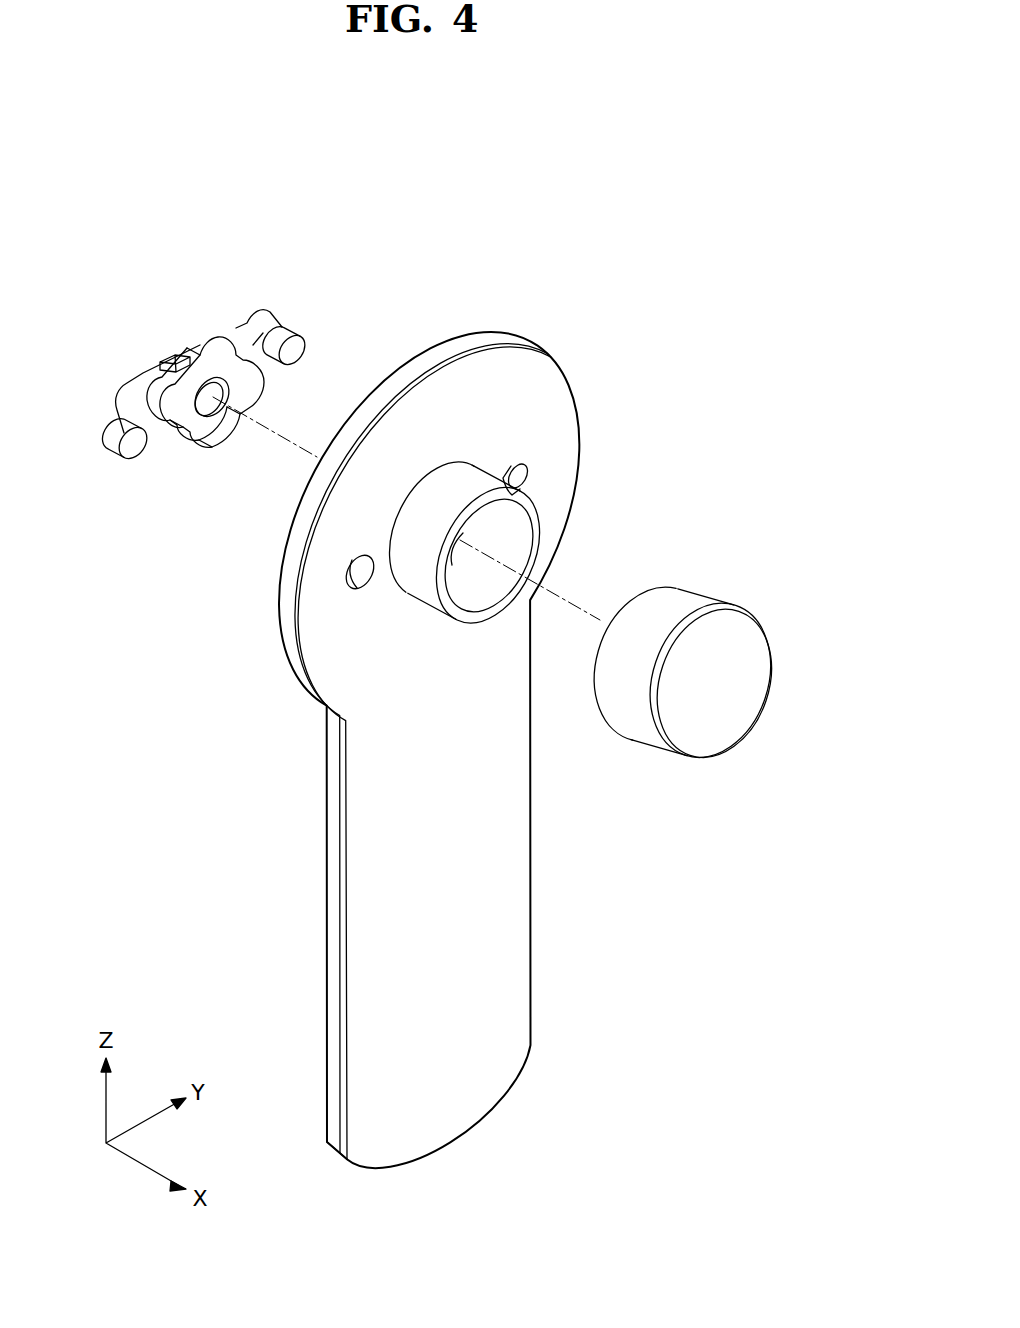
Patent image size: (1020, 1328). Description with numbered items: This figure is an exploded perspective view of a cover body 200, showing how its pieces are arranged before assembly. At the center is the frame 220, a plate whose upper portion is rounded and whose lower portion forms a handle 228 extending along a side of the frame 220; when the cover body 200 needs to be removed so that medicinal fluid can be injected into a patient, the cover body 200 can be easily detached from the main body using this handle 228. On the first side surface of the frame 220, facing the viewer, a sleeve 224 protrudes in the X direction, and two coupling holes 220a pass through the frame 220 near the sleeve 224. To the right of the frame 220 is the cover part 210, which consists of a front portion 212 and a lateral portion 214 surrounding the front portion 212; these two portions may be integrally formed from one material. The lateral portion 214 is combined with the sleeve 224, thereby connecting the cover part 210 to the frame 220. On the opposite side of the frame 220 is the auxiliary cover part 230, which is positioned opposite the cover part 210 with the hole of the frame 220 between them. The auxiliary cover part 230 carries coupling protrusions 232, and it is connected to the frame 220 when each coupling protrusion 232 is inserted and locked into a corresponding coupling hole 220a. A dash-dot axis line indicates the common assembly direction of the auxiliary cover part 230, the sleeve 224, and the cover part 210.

The cover body 200 is at (654, 259).
The cover part 210 is at (692, 727).
The front portion 212 is at (618, 820).
The lateral portion 214 is at (632, 712).
The frame 220 is at (515, 368).
The coupling hole 220a is at (353, 592).
The sleeve 224 is at (460, 485).
The handle 228 is at (336, 1153).
The auxiliary cover part 230 is at (178, 354).
The coupling protrusion 232 is at (296, 349).